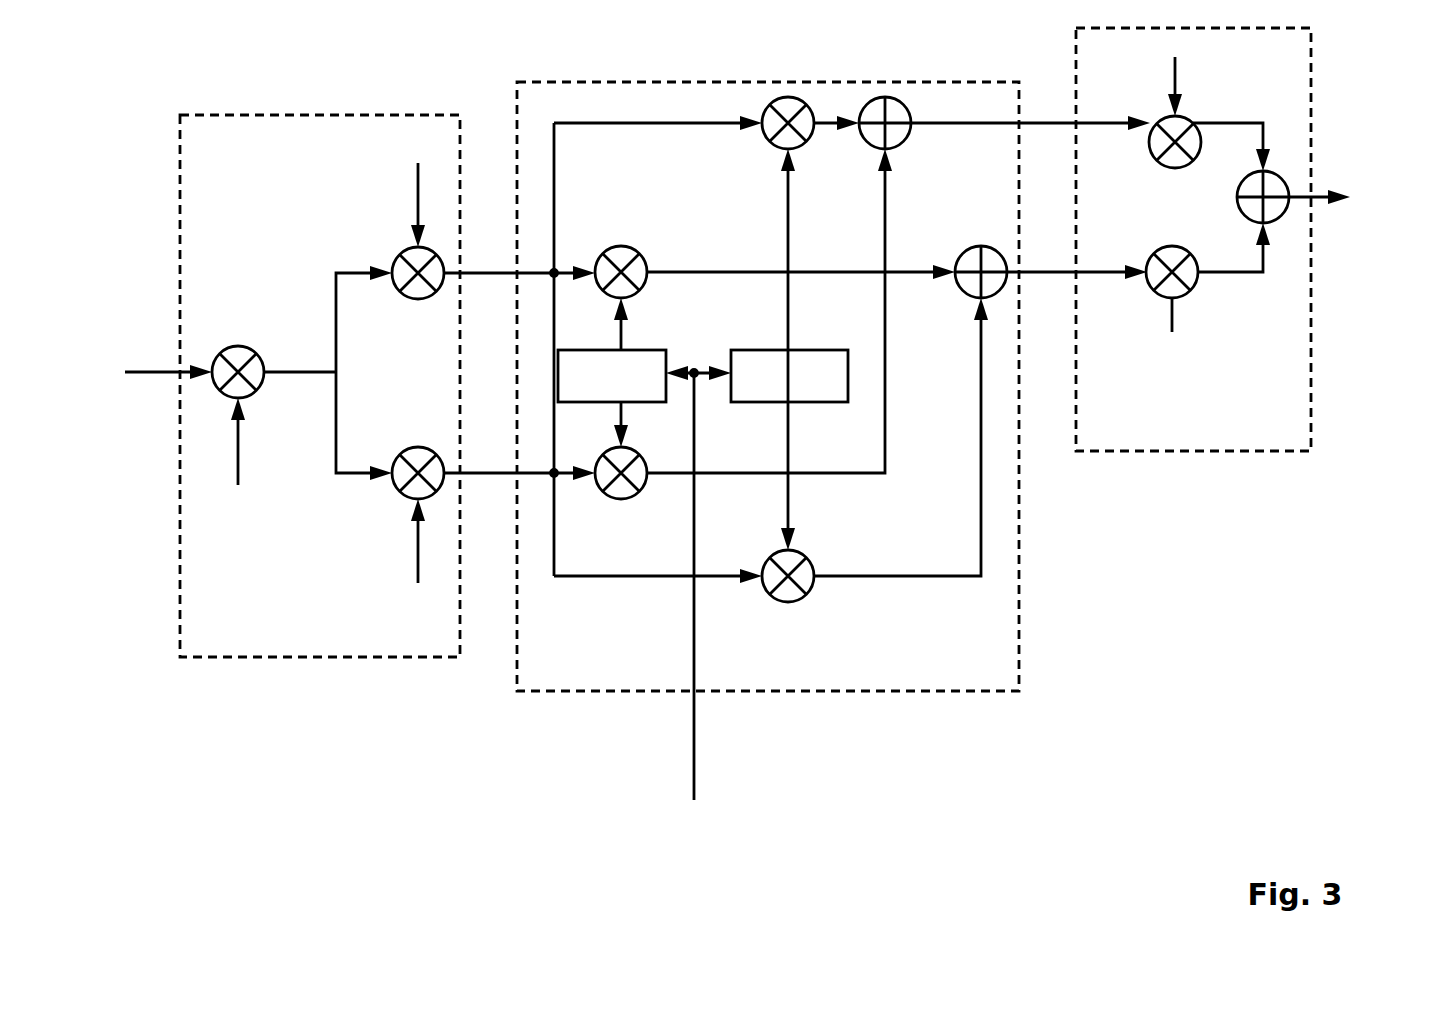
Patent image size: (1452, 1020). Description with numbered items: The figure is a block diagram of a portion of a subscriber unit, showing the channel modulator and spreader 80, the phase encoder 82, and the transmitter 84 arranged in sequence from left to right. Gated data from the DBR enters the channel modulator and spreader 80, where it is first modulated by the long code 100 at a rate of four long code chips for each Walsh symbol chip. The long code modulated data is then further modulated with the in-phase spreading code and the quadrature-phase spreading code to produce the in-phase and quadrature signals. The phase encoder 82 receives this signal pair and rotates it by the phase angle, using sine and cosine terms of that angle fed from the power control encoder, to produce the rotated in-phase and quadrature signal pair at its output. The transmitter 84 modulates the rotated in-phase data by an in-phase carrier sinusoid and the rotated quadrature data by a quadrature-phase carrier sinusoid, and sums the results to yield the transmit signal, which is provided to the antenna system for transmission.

The channel modulator and spreader 80 is at (333, 407).
The phase encoder 82 is at (915, 691).
The transmitter 84 is at (1112, 451).
The long code 100 is at (238, 437).